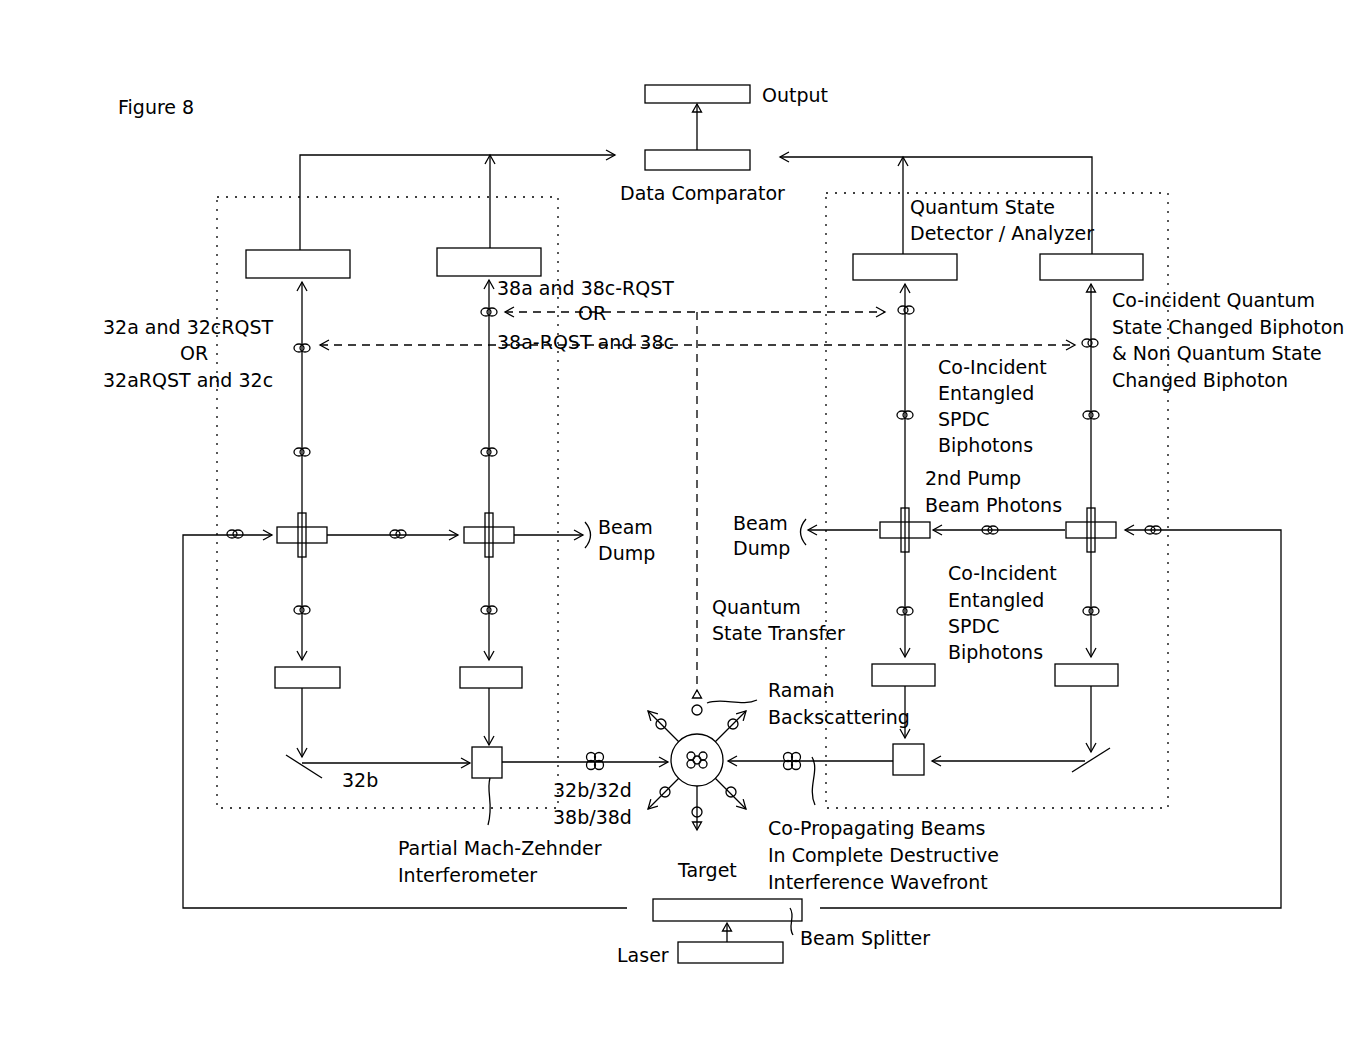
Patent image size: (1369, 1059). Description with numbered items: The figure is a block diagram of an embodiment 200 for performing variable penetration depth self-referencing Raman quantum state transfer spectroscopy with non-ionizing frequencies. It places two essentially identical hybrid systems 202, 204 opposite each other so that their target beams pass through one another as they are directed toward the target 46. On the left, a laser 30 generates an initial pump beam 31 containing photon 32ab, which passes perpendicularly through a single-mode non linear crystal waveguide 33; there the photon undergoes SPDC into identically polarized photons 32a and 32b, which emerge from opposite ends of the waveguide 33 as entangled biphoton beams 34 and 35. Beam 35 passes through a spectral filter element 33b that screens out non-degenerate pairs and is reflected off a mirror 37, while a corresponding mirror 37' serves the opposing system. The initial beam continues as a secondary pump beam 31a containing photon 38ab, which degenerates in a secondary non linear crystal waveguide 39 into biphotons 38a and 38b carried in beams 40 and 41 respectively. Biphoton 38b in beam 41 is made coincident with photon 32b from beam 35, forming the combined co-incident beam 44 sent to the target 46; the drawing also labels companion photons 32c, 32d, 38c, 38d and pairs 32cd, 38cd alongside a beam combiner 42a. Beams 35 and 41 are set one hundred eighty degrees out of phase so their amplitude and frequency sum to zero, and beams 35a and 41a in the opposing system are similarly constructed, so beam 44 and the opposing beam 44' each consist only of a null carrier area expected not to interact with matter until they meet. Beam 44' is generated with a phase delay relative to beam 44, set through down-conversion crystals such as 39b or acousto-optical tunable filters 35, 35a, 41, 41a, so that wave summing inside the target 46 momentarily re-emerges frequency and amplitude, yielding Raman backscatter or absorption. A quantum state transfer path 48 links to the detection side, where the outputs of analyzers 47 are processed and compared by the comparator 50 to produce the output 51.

The embodiment 200 is at (375, 112).
The hybrid system 202 is at (387, 492).
The hybrid system 204 is at (997, 492).
The laser 30 is at (730, 943).
The initial pump beam 31 is at (213, 522).
The secondary pump beam 31a is at (392, 527).
The photon 32a is at (280, 442).
The photon 32b is at (281, 600).
The photon beam 32c is at (267, 466).
The photon beam 32d is at (270, 624).
The photon 32ab is at (229, 550).
The entangled photon pair 32cd is at (228, 576).
The non linear crystal waveguide 33 is at (537, 714).
The spectral filter element 33b is at (307, 711).
The entangled biphoton beam 34 is at (314, 471).
The entangled biphoton beam 35 is at (315, 648).
The beam 35a is at (903, 646).
The mirror 37 is at (299, 774).
The mirror 37' is at (1099, 733).
The biphoton 38a is at (471, 442).
The biphoton 38b is at (470, 600).
The photon beam 38c is at (462, 466).
The photon beam 38d is at (461, 624).
The photon 38ab is at (394, 547).
The entangled photon pair 38cd is at (393, 578).
The secondary non linear crystal waveguide 39 is at (489, 532).
The down-conversion crystal 39b is at (491, 705).
The entangled biphoton beam 40 is at (502, 470).
The entangled biphoton beam 41 is at (505, 648).
The beam 41a is at (1086, 646).
The beam combiner 42a is at (474, 775).
The combined co-incident beam 44 is at (585, 750).
The combined co-incident beam 44' is at (810, 750).
The target 46 is at (712, 860).
The quantum characteristic detector 47 is at (393, 263).
The quantum state transfer 48 is at (685, 505).
The comparator 50 is at (697, 138).
The output 51 is at (697, 95).